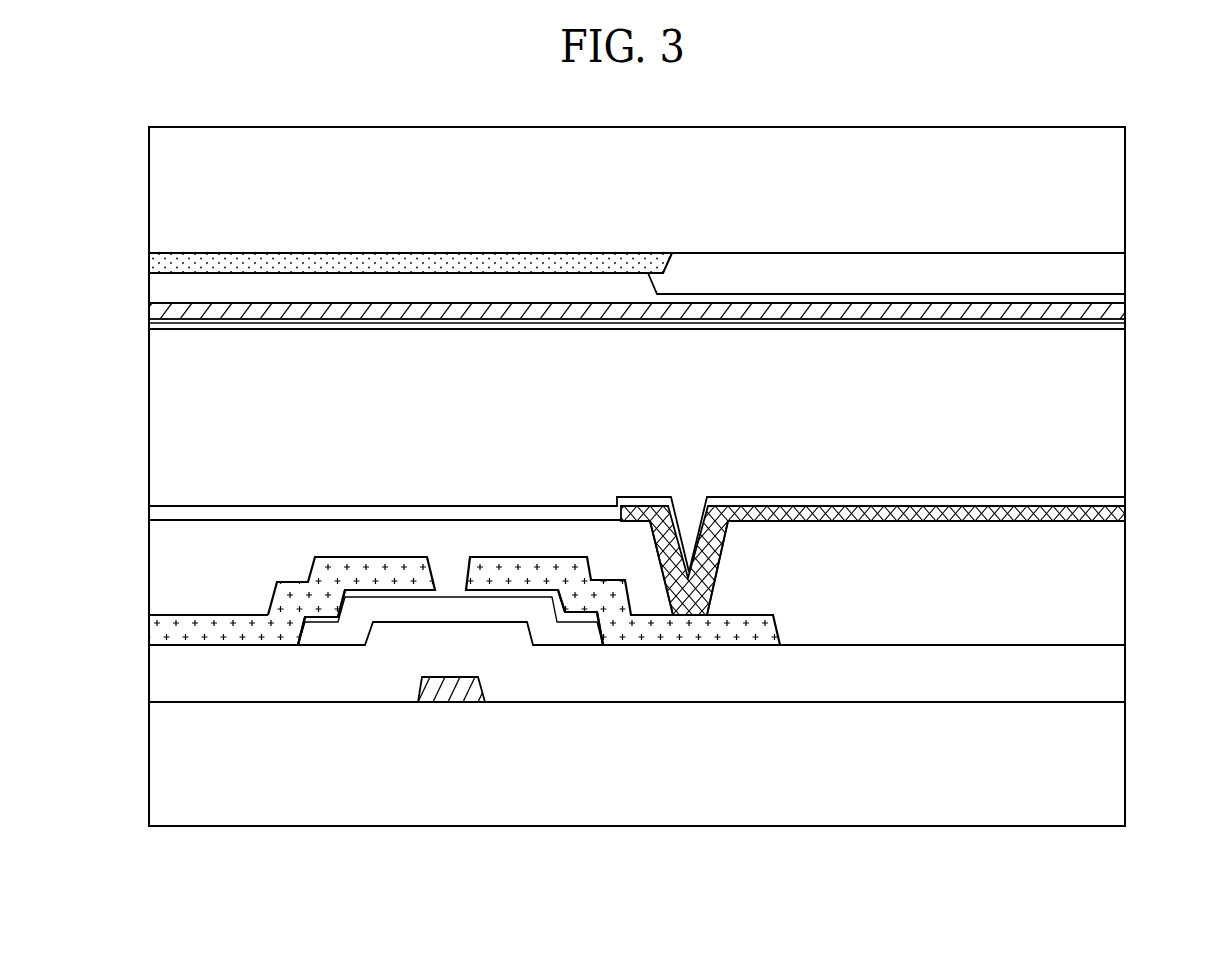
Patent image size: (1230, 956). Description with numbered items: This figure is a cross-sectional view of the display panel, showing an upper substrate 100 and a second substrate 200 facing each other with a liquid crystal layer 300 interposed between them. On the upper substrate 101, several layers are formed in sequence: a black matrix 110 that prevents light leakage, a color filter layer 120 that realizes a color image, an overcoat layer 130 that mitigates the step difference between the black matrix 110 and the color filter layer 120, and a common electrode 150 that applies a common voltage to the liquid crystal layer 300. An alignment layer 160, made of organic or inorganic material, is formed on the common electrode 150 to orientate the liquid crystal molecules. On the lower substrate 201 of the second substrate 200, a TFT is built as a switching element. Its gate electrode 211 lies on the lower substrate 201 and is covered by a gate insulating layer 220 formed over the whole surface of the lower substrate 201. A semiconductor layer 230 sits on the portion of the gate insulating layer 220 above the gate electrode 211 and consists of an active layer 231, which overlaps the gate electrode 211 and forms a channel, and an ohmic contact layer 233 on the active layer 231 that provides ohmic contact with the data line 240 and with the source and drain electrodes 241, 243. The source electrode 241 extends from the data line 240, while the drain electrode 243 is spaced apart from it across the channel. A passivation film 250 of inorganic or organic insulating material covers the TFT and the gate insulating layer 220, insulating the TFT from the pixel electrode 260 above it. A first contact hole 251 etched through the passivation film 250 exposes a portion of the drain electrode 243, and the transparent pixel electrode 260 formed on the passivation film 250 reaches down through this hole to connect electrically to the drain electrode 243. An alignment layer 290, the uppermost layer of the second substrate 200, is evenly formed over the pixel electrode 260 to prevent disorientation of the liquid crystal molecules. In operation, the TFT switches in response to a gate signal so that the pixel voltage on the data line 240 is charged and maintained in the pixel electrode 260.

The upper substrate 100 is at (129, 128).
The upper substrate 101 is at (635, 157).
The black matrix 110 is at (246, 268).
The color filter layer 120 is at (945, 265).
The overcoat layer 130 is at (263, 293).
The common electrode 150 is at (583, 316).
The alignment layer 160 is at (925, 328).
The second substrate 200 is at (130, 825).
The lower substrate 201 is at (818, 788).
The gate electrode 211 is at (455, 688).
The gate insulating layer 220 is at (615, 688).
The semiconductor layer 230 is at (441, 749).
The active layer 231 is at (360, 633).
The ohmic contact layer 233 is at (303, 628).
The data line 240 is at (213, 628).
The source electrode 241 is at (365, 575).
The drain electrode 243 is at (533, 565).
The passivation film 250 is at (1000, 635).
The first contact hole 251 is at (692, 522).
The pixel electrode 260 is at (1021, 507).
The alignment layer 290 is at (1123, 498).
The liquid crystal layer 300 is at (162, 477).
The thin film transistor TFT is at (447, 498).